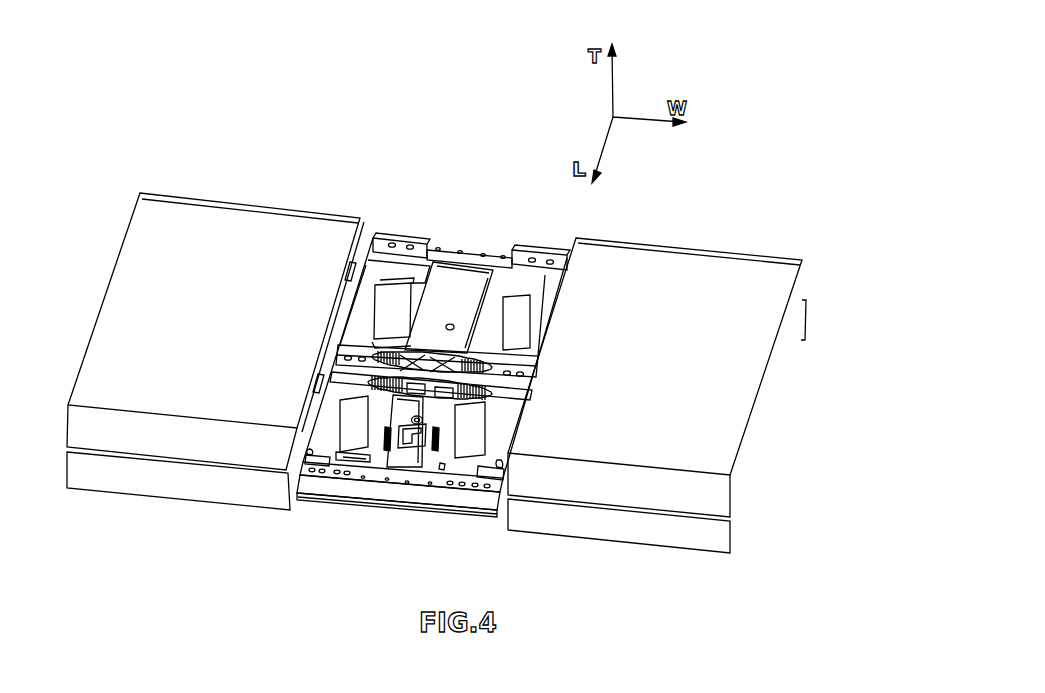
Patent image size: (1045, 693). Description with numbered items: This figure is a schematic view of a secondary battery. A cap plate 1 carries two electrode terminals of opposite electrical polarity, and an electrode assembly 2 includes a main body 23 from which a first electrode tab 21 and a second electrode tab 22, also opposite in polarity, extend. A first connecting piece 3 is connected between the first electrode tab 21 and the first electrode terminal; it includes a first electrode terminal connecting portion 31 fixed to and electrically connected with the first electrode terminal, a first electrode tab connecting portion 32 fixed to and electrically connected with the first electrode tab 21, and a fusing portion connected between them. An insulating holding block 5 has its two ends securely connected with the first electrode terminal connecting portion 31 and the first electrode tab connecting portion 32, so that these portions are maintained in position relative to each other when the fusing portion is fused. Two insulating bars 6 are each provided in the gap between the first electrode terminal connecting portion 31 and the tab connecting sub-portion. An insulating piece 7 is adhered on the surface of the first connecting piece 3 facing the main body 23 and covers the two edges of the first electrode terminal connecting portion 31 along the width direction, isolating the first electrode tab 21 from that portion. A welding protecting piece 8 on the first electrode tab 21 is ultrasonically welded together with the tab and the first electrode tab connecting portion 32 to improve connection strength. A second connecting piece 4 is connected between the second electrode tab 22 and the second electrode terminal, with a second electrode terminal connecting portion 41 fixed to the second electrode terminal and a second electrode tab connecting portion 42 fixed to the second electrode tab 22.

The cap plate 1 is at (450, 498).
The electrode assembly 2 is at (142, 172).
The first electrode tab 21 is at (332, 413).
The second electrode tab 22 is at (365, 305).
The main body 23 is at (142, 258).
The first connecting piece 3 is at (379, 490).
The first electrode terminal connecting portion 31 is at (402, 467).
The first electrode tab connecting portion 32 is at (345, 460).
The second connecting piece 4 is at (471, 252).
The second electrode terminal connecting portion 41 is at (462, 280).
The second electrode tab connecting portion 42 is at (410, 280).
The insulating holding block 5 is at (417, 437).
The insulating bar 6 is at (390, 443).
The insulating piece 7 is at (430, 447).
The welding protecting piece 8 is at (397, 313).